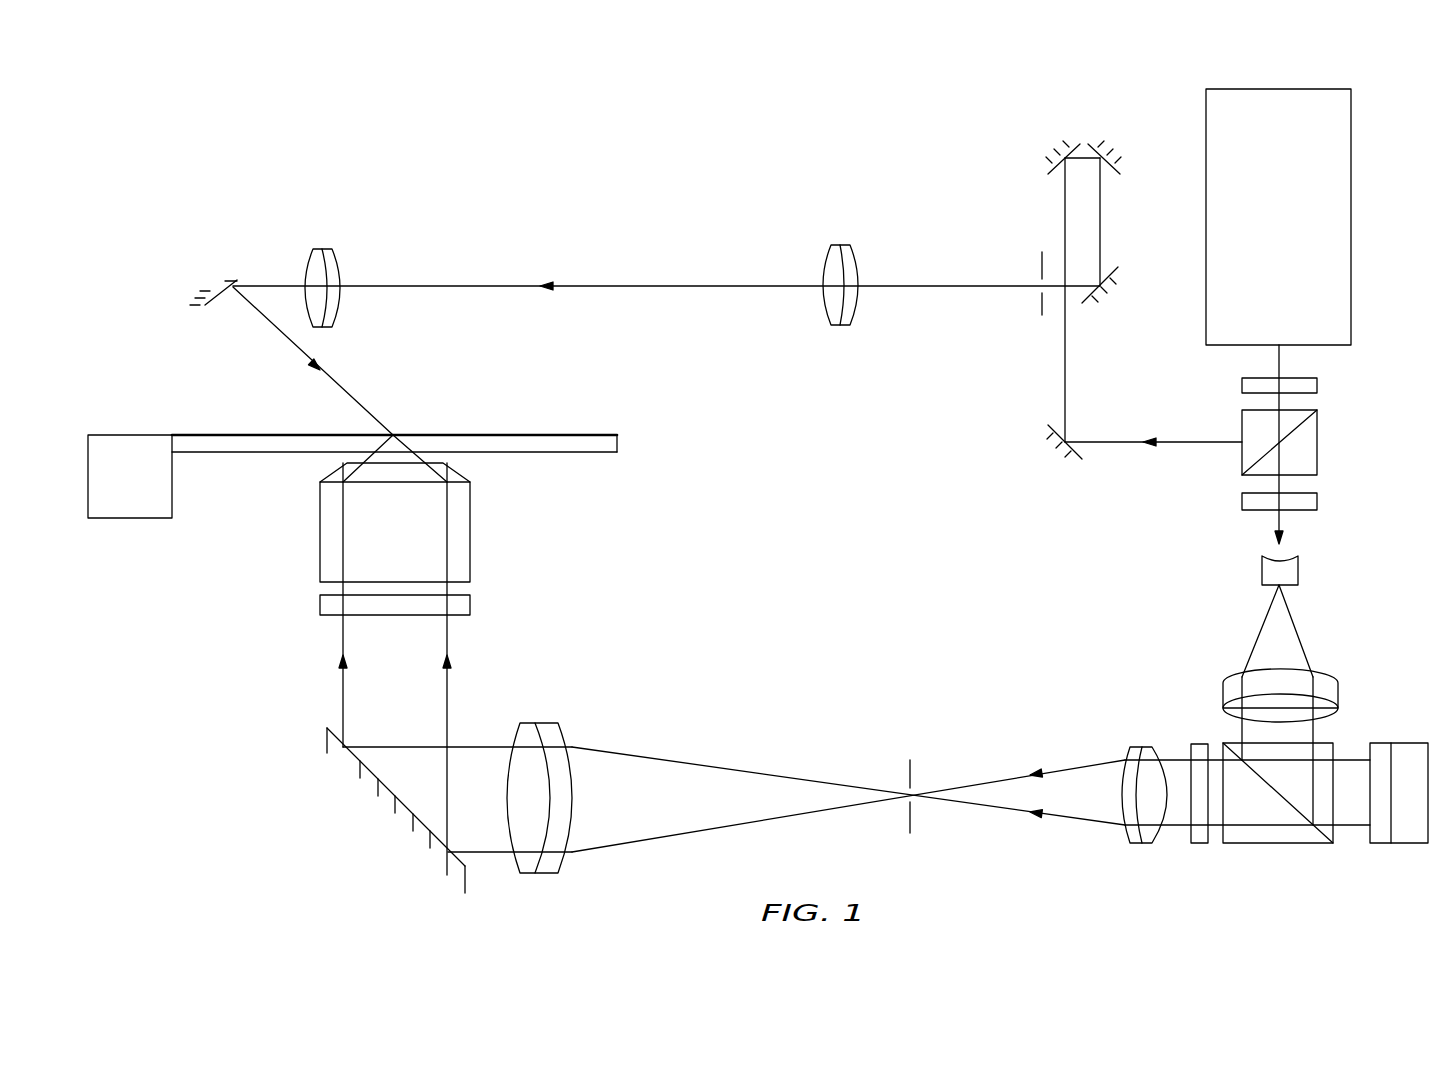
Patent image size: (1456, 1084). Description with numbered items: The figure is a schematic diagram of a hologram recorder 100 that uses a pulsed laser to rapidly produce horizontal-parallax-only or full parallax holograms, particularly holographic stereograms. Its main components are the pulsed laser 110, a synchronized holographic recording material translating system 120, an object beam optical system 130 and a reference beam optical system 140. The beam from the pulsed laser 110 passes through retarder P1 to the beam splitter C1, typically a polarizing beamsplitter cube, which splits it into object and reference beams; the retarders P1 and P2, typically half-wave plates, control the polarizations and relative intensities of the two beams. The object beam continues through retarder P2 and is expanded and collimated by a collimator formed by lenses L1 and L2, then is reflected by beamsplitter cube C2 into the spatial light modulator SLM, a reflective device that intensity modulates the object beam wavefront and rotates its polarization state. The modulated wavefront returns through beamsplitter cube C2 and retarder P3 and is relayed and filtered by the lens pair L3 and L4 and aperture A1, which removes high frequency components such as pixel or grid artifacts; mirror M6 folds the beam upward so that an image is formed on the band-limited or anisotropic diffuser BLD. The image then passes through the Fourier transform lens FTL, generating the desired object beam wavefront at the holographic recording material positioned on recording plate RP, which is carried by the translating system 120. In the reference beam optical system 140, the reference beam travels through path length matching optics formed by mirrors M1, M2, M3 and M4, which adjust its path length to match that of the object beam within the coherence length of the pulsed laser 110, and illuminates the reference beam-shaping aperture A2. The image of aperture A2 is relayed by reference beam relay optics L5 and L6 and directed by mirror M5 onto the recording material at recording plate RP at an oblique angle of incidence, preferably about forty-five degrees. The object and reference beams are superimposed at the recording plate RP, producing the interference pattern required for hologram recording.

The hologram recorder 100 is at (327, 842).
The pulsed laser 110 is at (1265, 296).
The synchronized holographic recording material translating system 120 is at (146, 490).
The object beam optical system 130 is at (1388, 412).
The reference beam optical system 140 is at (730, 223).
The mirror M1 is at (1059, 455).
The mirror M2 is at (1054, 147).
The mirror M3 is at (1112, 147).
The mirror M4 is at (1107, 294).
The mirror M5 is at (204, 290).
The mirror M6 is at (396, 810).
The lens L1 is at (1297, 570).
The lens L2 is at (1296, 695).
The lens L3 is at (1144, 779).
The lens L4 is at (539, 782).
The reference beam relay optics lens L5 is at (840, 270).
The reference beam relay optics lens L6 is at (322, 273).
The retarder P1 is at (1296, 387).
The retarder P2 is at (1297, 502).
The retarder P3 is at (1200, 812).
The beam splitter C1 is at (1297, 442).
The beamsplitter cube C2 is at (1278, 812).
The aperture A1 is at (910, 782).
The reference beam-shaping aperture A2 is at (1043, 302).
The recording plate RP is at (413, 441).
The Fourier transform lens FTL is at (417, 522).
The band-limited diffuser BLD is at (419, 606).
The spatial light modulator SLM is at (1399, 811).